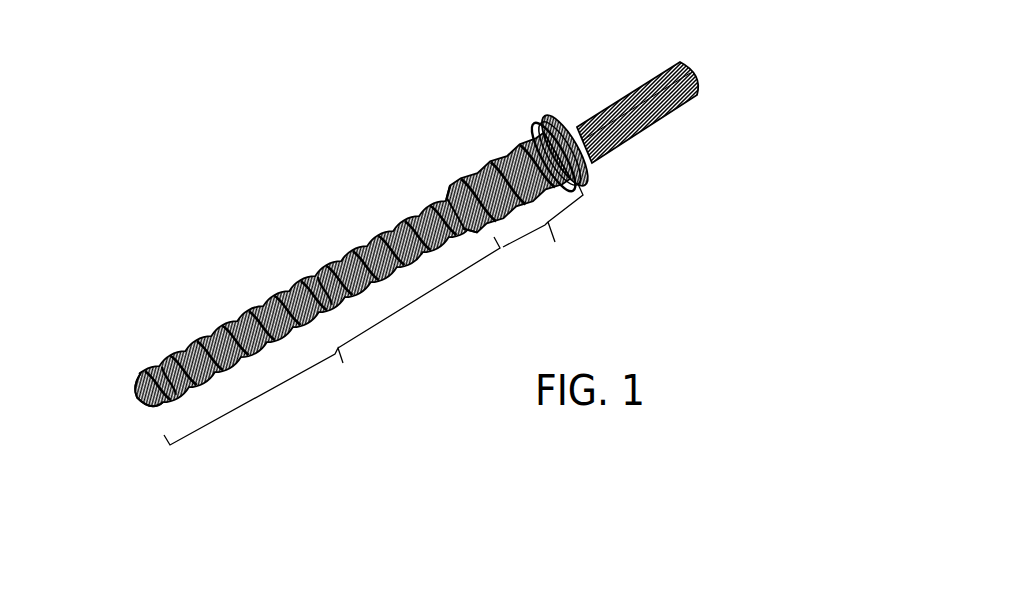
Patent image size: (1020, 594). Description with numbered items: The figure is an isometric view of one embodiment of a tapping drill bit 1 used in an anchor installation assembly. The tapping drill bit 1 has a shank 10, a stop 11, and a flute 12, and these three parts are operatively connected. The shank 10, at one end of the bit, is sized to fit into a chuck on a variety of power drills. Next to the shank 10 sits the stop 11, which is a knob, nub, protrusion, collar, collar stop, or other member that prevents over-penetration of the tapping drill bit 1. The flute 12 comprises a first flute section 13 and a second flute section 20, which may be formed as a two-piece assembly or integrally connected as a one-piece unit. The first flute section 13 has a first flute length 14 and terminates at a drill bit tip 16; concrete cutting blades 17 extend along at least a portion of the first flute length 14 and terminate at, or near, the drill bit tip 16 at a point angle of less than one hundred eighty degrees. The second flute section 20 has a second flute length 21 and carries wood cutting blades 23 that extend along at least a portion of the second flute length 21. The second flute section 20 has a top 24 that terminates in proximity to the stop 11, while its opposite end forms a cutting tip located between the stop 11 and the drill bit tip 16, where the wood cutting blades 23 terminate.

The tapping drill bit 1 is at (373, 222).
The shank 10 is at (642, 85).
The stop 11 is at (560, 122).
The flute 12 is at (316, 265).
The first flute section 13 is at (303, 278).
The first flute length 14 is at (347, 288).
The drill bit tip 16 is at (137, 397).
The concrete cutting blades 17 is at (377, 242).
The second flute section 20 is at (520, 145).
The second flute length 21 is at (543, 229).
The wood cutting blades 23 is at (480, 160).
The top 24 is at (537, 125).